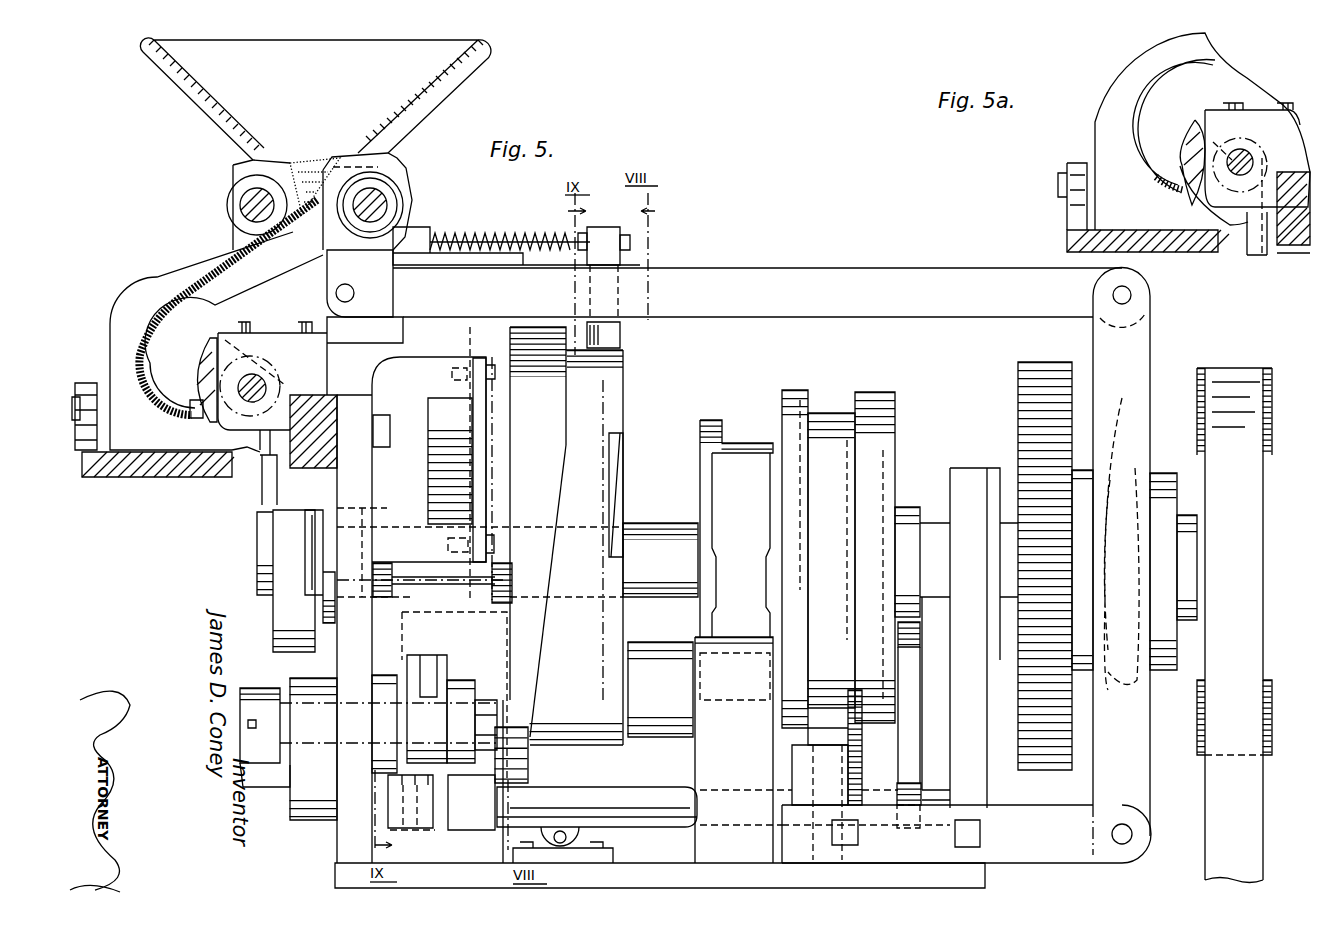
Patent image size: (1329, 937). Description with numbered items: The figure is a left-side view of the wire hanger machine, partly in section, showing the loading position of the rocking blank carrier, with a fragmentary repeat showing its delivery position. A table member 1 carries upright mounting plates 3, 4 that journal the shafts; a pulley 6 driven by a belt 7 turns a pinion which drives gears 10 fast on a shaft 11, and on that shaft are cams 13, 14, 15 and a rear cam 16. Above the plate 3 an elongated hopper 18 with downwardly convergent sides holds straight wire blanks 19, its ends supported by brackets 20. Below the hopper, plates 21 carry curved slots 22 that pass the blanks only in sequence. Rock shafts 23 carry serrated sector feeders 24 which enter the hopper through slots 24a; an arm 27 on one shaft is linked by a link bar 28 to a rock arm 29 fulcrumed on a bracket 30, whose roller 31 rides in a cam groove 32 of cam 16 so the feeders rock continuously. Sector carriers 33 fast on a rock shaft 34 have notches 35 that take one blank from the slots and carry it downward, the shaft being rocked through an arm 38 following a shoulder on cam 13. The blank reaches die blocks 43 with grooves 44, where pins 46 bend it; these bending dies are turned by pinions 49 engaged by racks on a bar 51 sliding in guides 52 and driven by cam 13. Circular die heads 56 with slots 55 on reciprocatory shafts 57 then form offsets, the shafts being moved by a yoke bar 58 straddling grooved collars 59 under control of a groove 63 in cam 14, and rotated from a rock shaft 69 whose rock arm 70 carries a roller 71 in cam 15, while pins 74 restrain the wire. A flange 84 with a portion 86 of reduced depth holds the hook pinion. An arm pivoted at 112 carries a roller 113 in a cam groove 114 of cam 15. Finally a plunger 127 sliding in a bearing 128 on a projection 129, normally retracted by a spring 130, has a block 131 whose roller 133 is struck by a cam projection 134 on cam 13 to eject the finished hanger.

In FIG. 5, the table member 1 is at (737, 837).
In FIG. 5, the mounting plate 3 is at (368, 648).
In FIG. 5, the mounting plate 4 is at (980, 739).
In FIG. 5, the pulley 6 is at (1273, 389).
In FIG. 5, the belt 7 is at (1265, 793).
In FIG. 5, the gears 10 is at (1018, 383).
In FIG. 5, the shaft 11 is at (654, 523).
In FIG. 5, the cam 13 is at (626, 393).
In FIG. 5, the cam 14 is at (708, 420).
In FIG. 5, the cam 15 is at (797, 390).
In FIG. 5, the cam 16 is at (1162, 473).
In FIG. 5, the hopper 18 is at (480, 68).
In FIG. 5, the hanger-forming blanks 19 is at (315, 168).
In FIG. 5A, the hanger-forming blanks 19 is at (1180, 194).
In FIG. 5, the brackets 20 is at (186, 478).
In FIG. 5, the vertical plates 21 is at (200, 295).
In FIG. 5A, the vertical plates 21 is at (1140, 65).
In FIG. 5, the curved slots 22 is at (158, 277).
In FIG. 5A, the curved slots 22 is at (1098, 118).
In FIG. 5, the rock shafts 23 is at (400, 195).
In FIG. 5, the blank feeders 24 is at (380, 161).
In FIG. 5, the slots 24a is at (278, 150).
In FIG. 5, the arm 27 is at (335, 252).
In FIG. 5, the link bar 28 is at (738, 275).
In FIG. 5, the rock arm 29 is at (1153, 345).
In FIG. 5, the bracket 30 is at (966, 834).
In FIG. 5, the roller 31 is at (1123, 555).
In FIG. 5, the cam groove 32 is at (1116, 485).
In FIG. 5, the carriers 33 is at (206, 365).
In FIG. 5A, the carriers 33 is at (1186, 152).
In FIG. 5, the rock shaft 34 is at (265, 381).
In FIG. 5A, the rock shaft 34 is at (1250, 157).
In FIG. 5, the notches 35 is at (178, 402).
In FIG. 5A, the notches 35 is at (1258, 256).
In FIG. 5, the arm 38 is at (588, 782).
In FIG. 5, the die blocks 43 is at (268, 482).
In FIG. 5A, the die blocks 43 is at (1288, 250).
In FIG. 5, the blank-receiving grooves 44 is at (288, 462).
In FIG. 5, the pins 46 is at (546, 589).
In FIG. 5, the pinions 49 is at (434, 481).
In FIG. 5, the bar 51 is at (463, 417).
In FIG. 5, the guides 52 is at (478, 475).
In FIG. 5, the slots 55 is at (250, 727).
In FIG. 5, the die heads 56 is at (255, 688).
In FIG. 5, the shafts 57 is at (402, 700).
In FIG. 5, the yoke bar 58 is at (450, 658).
In FIG. 5, the grooved collars 59 is at (466, 682).
In FIG. 5, the groove 63 is at (738, 455).
In FIG. 5, the rock shaft 69 is at (667, 798).
In FIG. 5, the rock arm 70 is at (908, 682).
In FIG. 5, the roller 71 is at (903, 634).
In FIG. 5, the pins 74 is at (272, 787).
In FIG. 5, the flange 84 is at (275, 615).
In FIG. 5, the portion of reduced depth 86 is at (305, 545).
In FIG. 5, the pivot 112 is at (840, 773).
In FIG. 5, the roller 113 is at (850, 735).
In FIG. 5, the cam groove 114 is at (838, 412).
In FIG. 5, the plunger 127 is at (500, 235).
In FIG. 5, the bearing 128 is at (429, 233).
In FIG. 5, the rearward projection 129 is at (520, 237).
In FIG. 5, the spring 130 is at (489, 232).
In FIG. 5, the block 131 is at (600, 229).
In FIG. 5, the roller 133 is at (620, 337).
In FIG. 5, the cam projection 134 is at (618, 493).